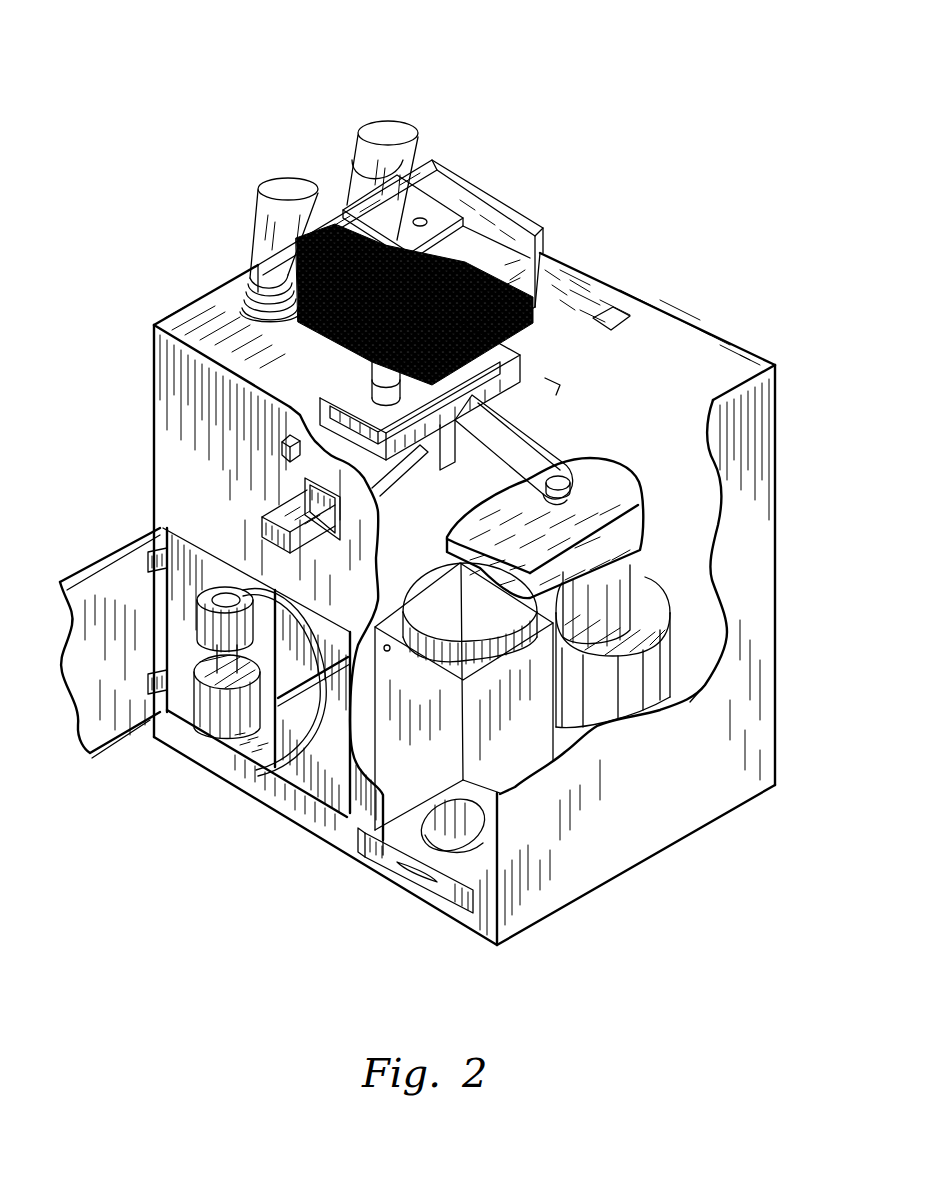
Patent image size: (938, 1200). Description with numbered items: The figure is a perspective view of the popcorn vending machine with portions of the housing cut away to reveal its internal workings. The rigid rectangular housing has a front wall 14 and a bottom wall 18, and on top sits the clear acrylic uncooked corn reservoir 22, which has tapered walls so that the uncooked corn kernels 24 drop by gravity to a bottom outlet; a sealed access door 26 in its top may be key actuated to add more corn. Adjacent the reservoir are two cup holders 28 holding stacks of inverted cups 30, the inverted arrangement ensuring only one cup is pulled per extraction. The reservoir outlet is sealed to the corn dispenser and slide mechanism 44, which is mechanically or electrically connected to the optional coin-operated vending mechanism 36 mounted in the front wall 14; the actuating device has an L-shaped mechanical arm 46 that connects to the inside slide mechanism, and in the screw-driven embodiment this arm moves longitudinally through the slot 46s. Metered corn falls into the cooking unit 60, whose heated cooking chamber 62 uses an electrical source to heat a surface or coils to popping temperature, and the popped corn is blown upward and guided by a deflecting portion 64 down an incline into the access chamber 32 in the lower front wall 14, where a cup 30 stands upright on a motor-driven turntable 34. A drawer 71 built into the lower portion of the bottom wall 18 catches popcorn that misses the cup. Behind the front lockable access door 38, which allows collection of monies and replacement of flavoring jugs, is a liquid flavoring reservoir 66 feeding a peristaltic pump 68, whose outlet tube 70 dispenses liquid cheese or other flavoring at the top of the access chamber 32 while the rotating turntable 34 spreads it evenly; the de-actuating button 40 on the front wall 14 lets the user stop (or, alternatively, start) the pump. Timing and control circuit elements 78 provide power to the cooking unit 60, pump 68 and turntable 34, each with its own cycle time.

The front wall 14 is at (165, 348).
The bottom wall 18 is at (498, 948).
The uncooked corn reservoir 22 is at (500, 233).
The uncooked corn kernels 24 is at (400, 233).
The access door 26 is at (440, 170).
The cup holders 28 is at (248, 288).
The cups 30 is at (388, 138).
The access chamber 32 is at (408, 820).
The turntable 34 is at (367, 835).
The vending mechanism 36 is at (287, 513).
The front lockable access door 38 is at (108, 695).
The de-actuating button 40 is at (283, 438).
The corn dispenser and slide mechanism 44 is at (323, 366).
The mechanical arm 46 is at (540, 440).
The slot 46s is at (552, 378).
The cooking unit 60 is at (703, 650).
The heated cooking chamber 62 is at (640, 595).
The deflecting portion 64 is at (635, 500).
The liquid flavoring reservoir 66 is at (213, 773).
The peristaltic pump 68 is at (156, 562).
The outlet tube 70 is at (268, 757).
The drawer 71 is at (490, 918).
The timing and control circuit elements 78 is at (613, 313).